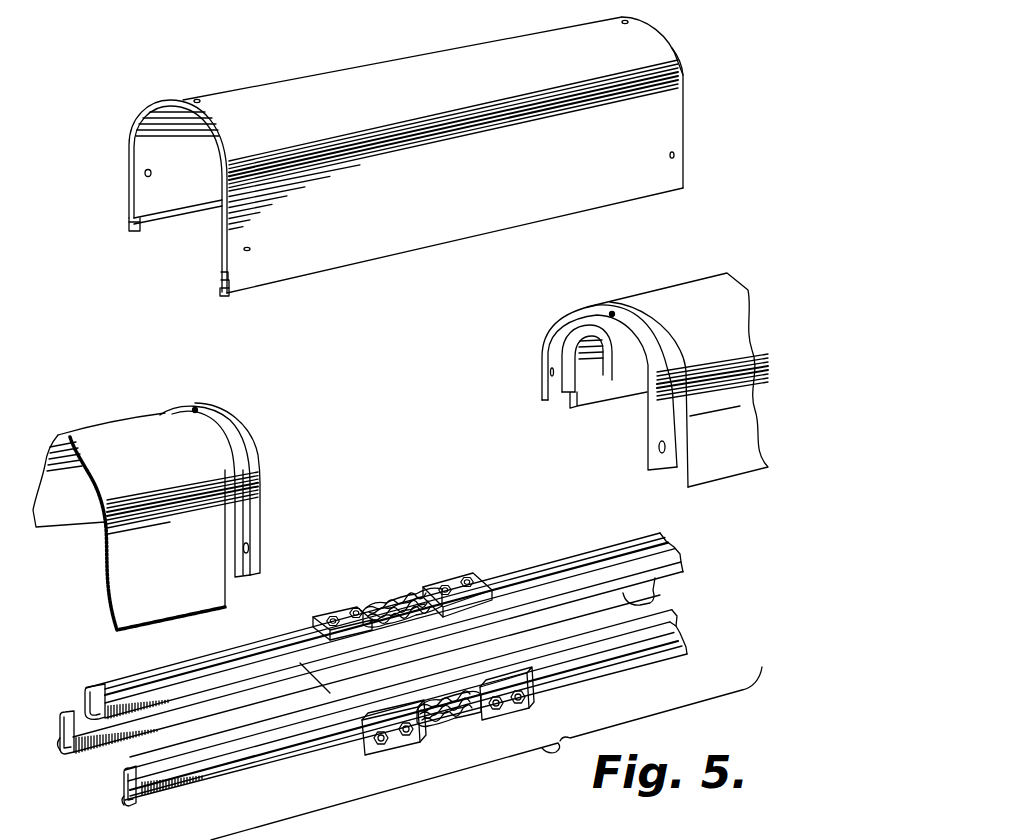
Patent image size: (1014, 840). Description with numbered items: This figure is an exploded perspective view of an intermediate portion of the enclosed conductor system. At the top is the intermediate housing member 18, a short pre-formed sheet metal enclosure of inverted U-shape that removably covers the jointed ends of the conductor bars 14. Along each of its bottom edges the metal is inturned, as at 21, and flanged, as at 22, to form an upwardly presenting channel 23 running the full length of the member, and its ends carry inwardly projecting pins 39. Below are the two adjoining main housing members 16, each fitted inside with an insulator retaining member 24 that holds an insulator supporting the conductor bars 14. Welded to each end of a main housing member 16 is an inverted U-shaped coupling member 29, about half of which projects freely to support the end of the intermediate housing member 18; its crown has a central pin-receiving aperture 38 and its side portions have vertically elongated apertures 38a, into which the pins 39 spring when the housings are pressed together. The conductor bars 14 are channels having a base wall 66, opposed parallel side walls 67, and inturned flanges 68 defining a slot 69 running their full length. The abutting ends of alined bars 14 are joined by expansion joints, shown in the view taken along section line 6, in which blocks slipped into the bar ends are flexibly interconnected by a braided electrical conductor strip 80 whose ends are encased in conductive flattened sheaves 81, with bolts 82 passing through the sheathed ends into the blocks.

The section line 6 is at (257, 657).
The conductor bar 14 is at (680, 561).
The main housing member 16 is at (690, 296).
The intermediate housing member 18 is at (352, 85).
The inturned bottom edge 21 is at (135, 231).
The flange 22 is at (150, 225).
The upwardly presenting channel 23 is at (128, 223).
The insulator retaining member 24 is at (596, 408).
The coupling member 29 is at (575, 318).
The pin-receiving aperture 38 is at (613, 312).
The side wall pin-receiving aperture 38a is at (659, 449).
The inwardly projecting pin 39 is at (199, 100).
The base wall 66 is at (166, 722).
The side wall 67 is at (85, 694).
The inturned flange 68 is at (110, 684).
The slot 69 is at (592, 558).
The braided electrical conductor strip 80 is at (393, 597).
The flattened sheave 81 is at (456, 583).
The bolt 82 is at (356, 619).